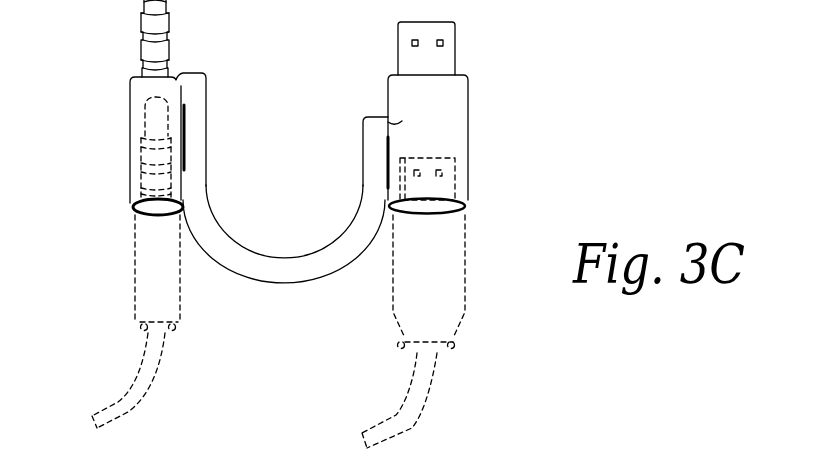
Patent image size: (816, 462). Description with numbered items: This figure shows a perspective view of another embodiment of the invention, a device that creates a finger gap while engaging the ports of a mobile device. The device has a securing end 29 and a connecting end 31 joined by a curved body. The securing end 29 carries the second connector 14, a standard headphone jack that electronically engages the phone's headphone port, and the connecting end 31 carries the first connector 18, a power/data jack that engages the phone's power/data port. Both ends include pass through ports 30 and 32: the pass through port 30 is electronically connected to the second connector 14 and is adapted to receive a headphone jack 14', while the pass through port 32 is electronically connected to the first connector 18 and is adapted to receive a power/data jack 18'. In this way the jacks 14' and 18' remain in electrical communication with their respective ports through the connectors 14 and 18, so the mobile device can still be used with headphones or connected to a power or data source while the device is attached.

The second connector 14 is at (119, 38).
The first connector 18 is at (462, 51).
The securing end 29 is at (130, 115).
The pass through port 30 is at (133, 215).
The connecting end 31 is at (460, 130).
The pass through port 32 is at (465, 217).
The headphone jack 14' is at (110, 321).
The power/data jack 18' is at (451, 331).